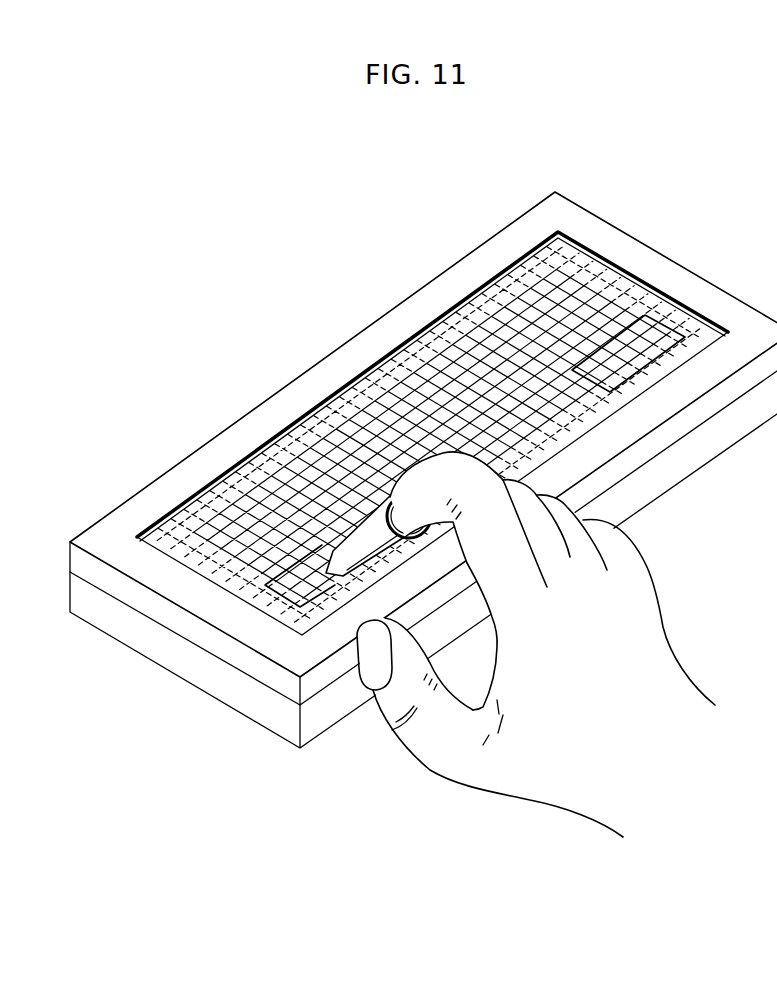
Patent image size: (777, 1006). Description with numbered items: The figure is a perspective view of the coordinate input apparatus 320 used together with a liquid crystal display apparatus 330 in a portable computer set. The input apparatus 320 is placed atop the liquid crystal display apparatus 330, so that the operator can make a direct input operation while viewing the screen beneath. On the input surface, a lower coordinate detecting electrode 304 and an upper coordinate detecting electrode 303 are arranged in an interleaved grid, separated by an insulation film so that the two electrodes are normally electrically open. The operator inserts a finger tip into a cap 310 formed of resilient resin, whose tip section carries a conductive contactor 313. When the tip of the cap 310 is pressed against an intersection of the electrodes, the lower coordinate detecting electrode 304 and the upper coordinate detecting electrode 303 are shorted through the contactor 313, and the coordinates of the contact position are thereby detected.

The upper coordinate detecting electrode 303 is at (153, 532).
The lower coordinate detecting electrode 304 is at (168, 548).
The cap 310 is at (363, 568).
The conductive contactor 313 is at (318, 563).
The input apparatus 320 is at (62, 558).
The liquid crystal display apparatus 330 is at (62, 592).